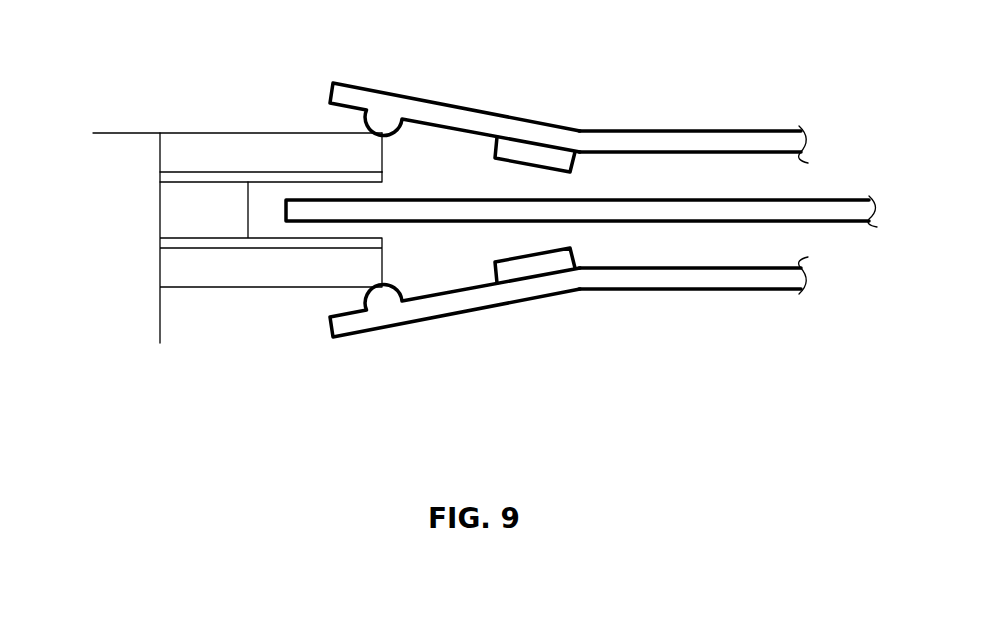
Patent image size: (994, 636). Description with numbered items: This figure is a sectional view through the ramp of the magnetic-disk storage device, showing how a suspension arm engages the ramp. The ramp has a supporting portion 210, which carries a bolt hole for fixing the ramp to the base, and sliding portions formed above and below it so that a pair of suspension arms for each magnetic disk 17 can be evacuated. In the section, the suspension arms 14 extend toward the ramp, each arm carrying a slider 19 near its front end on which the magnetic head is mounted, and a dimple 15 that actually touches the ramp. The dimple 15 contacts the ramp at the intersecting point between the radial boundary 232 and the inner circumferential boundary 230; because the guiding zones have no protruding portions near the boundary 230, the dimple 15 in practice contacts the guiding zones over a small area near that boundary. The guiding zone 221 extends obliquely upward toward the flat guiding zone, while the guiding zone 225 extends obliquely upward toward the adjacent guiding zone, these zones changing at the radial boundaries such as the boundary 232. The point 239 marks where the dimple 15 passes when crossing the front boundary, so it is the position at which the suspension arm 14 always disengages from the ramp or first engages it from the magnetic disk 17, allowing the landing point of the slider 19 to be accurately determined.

The suspension arm 14 is at (717, 140).
The dimple 15 is at (388, 111).
The magnetic disk 17 is at (833, 205).
The slider 19 is at (528, 150).
The supporting portion 210 is at (130, 277).
The guiding zone 221 is at (258, 148).
The guiding zone 225 is at (287, 88).
The inner circumferential boundary 230 is at (383, 154).
The radial boundary 232 is at (222, 133).
The point 239 is at (383, 172).